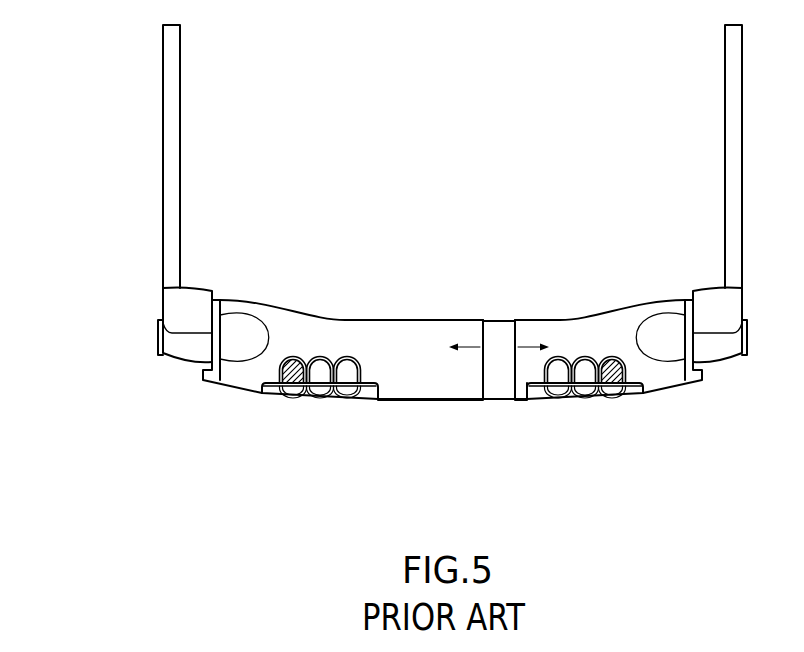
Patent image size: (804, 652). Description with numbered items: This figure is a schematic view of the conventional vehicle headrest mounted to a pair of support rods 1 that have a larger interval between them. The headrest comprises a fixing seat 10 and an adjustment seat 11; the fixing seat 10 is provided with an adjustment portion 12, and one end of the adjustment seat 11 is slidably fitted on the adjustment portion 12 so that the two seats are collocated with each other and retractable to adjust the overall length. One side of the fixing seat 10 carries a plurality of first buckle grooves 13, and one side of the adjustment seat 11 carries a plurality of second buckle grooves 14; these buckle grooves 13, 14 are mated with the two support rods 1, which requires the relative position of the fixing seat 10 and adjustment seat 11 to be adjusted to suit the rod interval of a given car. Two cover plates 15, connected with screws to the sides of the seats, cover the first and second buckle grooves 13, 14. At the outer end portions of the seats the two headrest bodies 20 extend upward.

The support rod 1 is at (292, 362).
The fixing seat 10 is at (592, 323).
The adjustment seat 11 is at (410, 333).
The adjustment portion 12 is at (503, 330).
The first buckle grooves 13 is at (556, 372).
The second buckle grooves 14 is at (320, 372).
The cover plate 15 is at (315, 392).
The headrest body 20 is at (122, 168).